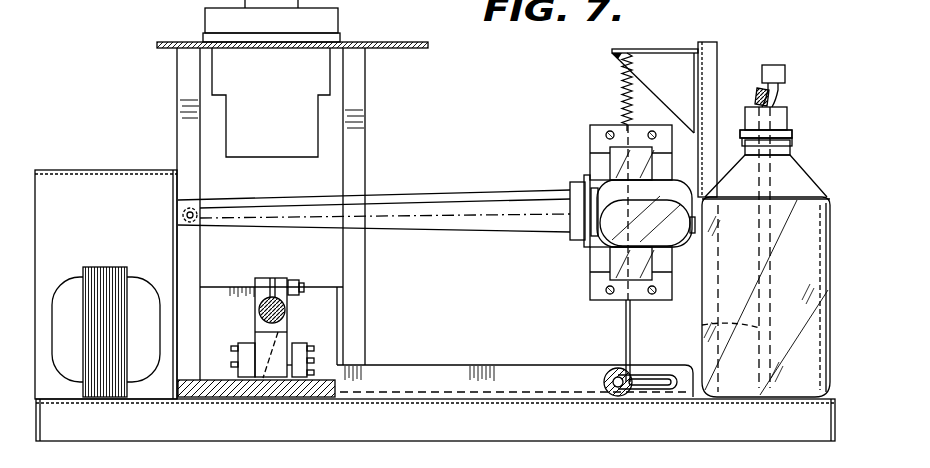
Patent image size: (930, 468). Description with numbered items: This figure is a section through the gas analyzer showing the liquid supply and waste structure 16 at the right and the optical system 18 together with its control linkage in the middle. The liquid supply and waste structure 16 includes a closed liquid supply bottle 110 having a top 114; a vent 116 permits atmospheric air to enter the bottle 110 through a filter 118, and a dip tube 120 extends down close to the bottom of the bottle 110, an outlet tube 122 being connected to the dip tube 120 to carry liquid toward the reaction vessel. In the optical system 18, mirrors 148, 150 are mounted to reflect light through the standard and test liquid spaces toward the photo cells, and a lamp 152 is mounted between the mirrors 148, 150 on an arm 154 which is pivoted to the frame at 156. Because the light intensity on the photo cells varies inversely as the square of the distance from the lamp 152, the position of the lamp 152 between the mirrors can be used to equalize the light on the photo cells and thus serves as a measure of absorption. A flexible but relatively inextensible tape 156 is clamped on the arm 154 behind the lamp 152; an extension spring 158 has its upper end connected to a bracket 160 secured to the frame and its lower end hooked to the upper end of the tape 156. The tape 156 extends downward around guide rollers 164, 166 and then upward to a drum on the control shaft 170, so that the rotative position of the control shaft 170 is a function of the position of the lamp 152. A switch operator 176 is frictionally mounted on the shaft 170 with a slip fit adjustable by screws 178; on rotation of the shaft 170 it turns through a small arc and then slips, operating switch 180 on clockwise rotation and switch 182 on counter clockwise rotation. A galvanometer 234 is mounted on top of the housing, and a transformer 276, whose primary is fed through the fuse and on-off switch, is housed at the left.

The galvanometer 234 is at (322, 21).
The transformer 276 is at (140, 247).
The arm 154 is at (412, 233).
The tape 156 is at (200, 207).
The optical system 18 is at (582, 121).
The mirror 148 is at (614, 160).
The lamp 152 is at (606, 250).
The mirror 150 is at (610, 263).
The spring 158 is at (621, 73).
The bracket 160 is at (672, 38).
The guide roller 164 is at (612, 370).
The guide roller 166 is at (263, 382).
The switch operator 176 is at (287, 326).
The control shaft 170 is at (259, 311).
The screws 178 is at (296, 280).
The switch 180 is at (238, 355).
The switch 182 is at (314, 352).
The liquid supply bottle 110 is at (797, 176).
The dip tube 120 is at (706, 325).
The top 114 is at (786, 115).
The vent 116 is at (778, 87).
The outlet tube 122 is at (756, 84).
The filter 118 is at (773, 65).
The liquid supply and waste structure 16 is at (810, 148).